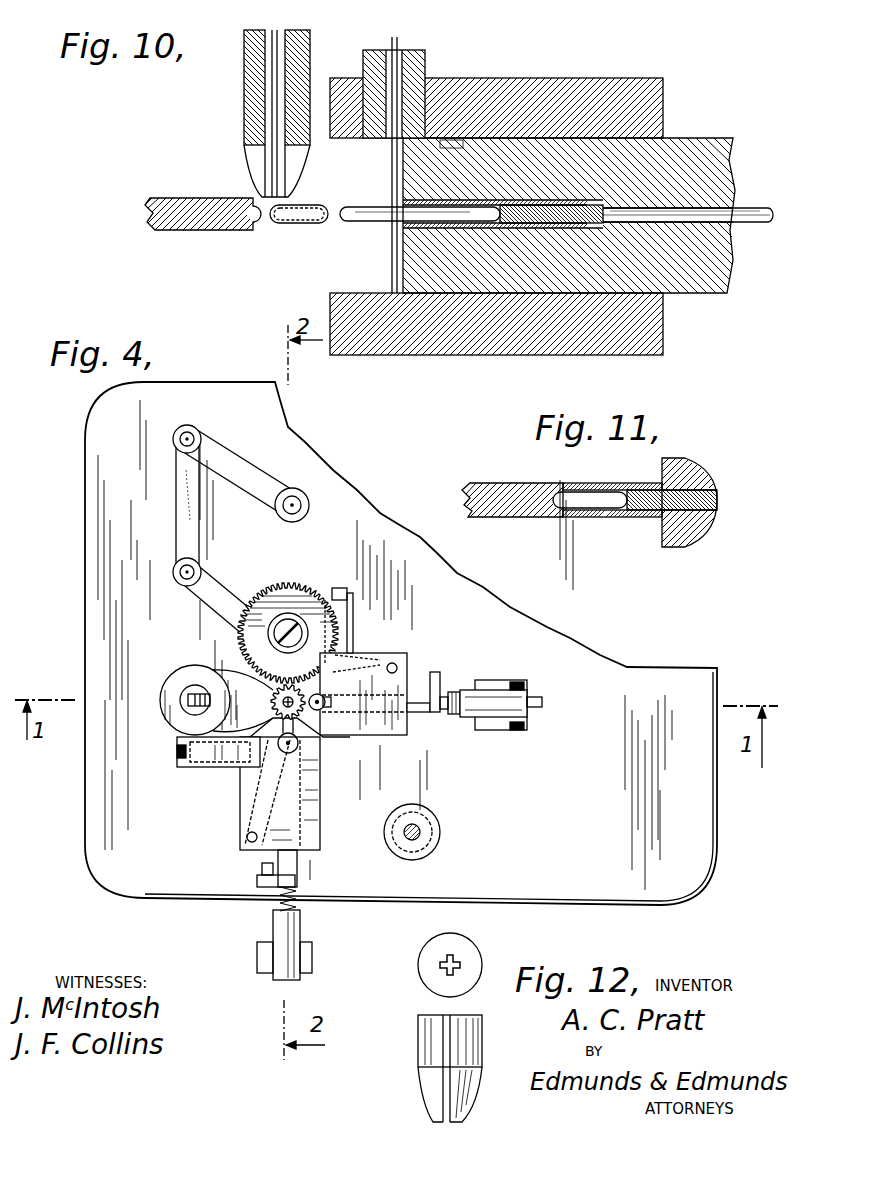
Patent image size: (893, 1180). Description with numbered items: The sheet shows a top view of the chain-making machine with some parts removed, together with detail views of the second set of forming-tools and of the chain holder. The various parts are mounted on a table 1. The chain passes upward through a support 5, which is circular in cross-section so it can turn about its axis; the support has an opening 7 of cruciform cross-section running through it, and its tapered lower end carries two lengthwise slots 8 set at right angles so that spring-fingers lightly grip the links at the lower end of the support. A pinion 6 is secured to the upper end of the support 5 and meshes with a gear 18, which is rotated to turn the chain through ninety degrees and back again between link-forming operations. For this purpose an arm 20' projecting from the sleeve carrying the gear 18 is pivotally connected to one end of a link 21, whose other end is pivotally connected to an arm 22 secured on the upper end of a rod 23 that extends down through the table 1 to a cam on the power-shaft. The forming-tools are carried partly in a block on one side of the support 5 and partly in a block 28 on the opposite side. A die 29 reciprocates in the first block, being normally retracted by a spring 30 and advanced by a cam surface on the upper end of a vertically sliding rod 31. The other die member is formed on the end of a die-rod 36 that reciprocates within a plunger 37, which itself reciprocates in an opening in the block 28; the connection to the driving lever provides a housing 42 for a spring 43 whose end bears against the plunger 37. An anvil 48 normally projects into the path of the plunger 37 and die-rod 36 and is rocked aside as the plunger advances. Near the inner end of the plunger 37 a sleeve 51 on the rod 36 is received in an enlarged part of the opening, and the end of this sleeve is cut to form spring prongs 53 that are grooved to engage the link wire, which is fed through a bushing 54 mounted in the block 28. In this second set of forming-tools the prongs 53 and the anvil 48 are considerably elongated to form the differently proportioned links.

In FIG. 4, the table 1 is at (401, 643).
In FIG. 10, the support for the chain 5 is at (250, 118).
In FIG. 12, the support for the chain 5 is at (470, 952).
In FIG. 4, the pinion 6 is at (273, 690).
In FIG. 10, the opening 7 is at (272, 168).
In FIG. 12, the opening 7 is at (442, 963).
In FIG. 12, the lengthwise slots 8 is at (443, 1083).
In FIG. 4, the gear 18 is at (297, 590).
In FIG. 4, the arm 20' is at (211, 598).
In FIG. 4, the link 21 is at (176, 513).
In FIG. 4, the arm 22 is at (247, 470).
In FIG. 4, the rod 23 is at (298, 505).
In FIG. 4, the block 28 is at (362, 735).
In FIG. 10, the die 29 is at (188, 229).
In FIG. 4, the spring 30 is at (180, 700).
In FIG. 4, the rod 31 is at (190, 706).
In FIG. 10, the die-rod 36 is at (766, 195).
In FIG. 4, the die-rod 36 is at (448, 710).
In FIG. 4, the plunger 37 is at (415, 702).
In FIG. 4, the housing 42 is at (490, 700).
In FIG. 4, the spring 43 is at (447, 698).
In FIG. 10, the anvil 48 is at (358, 214).
In FIG. 10, the sleeve 51 is at (455, 236).
In FIG. 11, the sleeve 51 is at (652, 519).
In FIG. 10, the prongs 53 is at (410, 240).
In FIG. 11, the prongs 53 is at (586, 519).
In FIG. 10, the bushing 54 is at (405, 103).